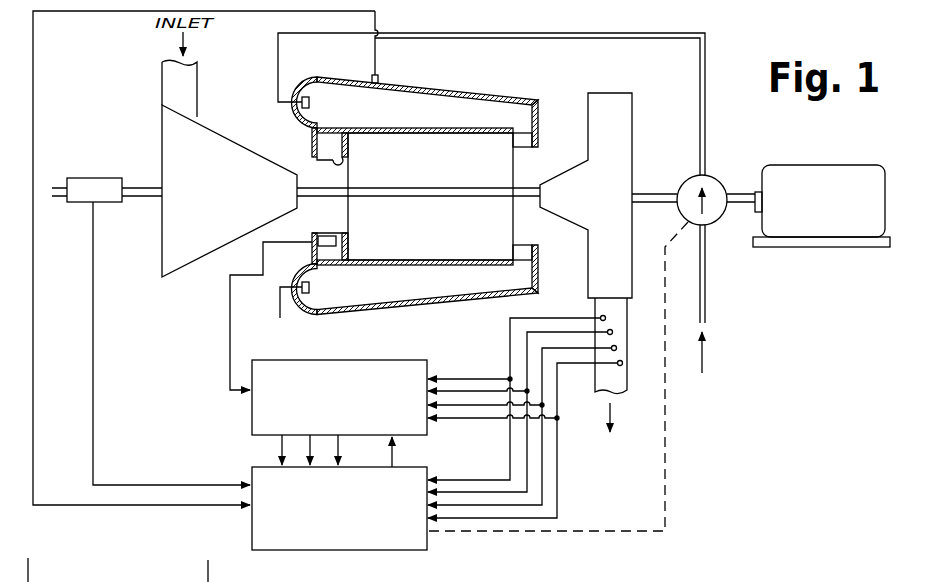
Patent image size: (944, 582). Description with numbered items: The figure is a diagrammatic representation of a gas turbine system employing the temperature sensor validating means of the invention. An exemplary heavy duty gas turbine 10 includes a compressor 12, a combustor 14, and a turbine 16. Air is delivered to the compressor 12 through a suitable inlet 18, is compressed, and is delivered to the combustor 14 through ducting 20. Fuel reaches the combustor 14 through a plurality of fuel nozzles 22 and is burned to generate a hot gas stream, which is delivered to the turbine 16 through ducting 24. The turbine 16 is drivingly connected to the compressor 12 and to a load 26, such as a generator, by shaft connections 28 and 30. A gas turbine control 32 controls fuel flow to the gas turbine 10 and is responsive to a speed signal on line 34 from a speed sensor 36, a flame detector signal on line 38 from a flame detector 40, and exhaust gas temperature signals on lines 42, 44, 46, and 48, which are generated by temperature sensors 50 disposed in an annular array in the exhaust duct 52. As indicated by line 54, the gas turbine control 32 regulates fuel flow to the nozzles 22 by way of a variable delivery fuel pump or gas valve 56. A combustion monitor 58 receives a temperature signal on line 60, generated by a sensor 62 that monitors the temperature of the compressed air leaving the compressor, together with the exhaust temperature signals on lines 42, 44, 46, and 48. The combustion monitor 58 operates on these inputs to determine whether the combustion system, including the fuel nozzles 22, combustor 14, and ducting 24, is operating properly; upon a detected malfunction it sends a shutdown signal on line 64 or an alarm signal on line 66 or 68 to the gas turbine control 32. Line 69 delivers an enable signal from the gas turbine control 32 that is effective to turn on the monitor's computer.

The gas turbine 10 is at (530, 87).
The compressor 12 is at (166, 233).
The combustor 14 is at (461, 119).
The turbine 16 is at (622, 140).
The inlet 18 is at (172, 80).
The ducting 20 is at (345, 166).
The fuel nozzles 22 is at (309, 104).
The ducting 24 is at (519, 148).
The load 26 is at (819, 172).
The shaft connection 28 is at (437, 181).
The shaft connection 30 is at (736, 213).
The gas turbine control 32 is at (350, 544).
The line 34 is at (93, 367).
The speed sensor 36 is at (104, 182).
The line 38 is at (33, 385).
The flame detector 40 is at (376, 84).
The line 42 is at (507, 440).
The line 44 is at (523, 455).
The line 46 is at (543, 488).
The line 48 is at (559, 475).
The temperature sensors 50 is at (606, 318).
The exhaust duct 52 is at (619, 381).
The line 54 is at (666, 501).
The variable delivery fuel pump or gas valve 56 is at (713, 178).
The combustion monitor 58 is at (256, 412).
The line 60 is at (229, 333).
The sensor 62 is at (336, 223).
The line 64 is at (339, 450).
The line 66 is at (313, 452).
The line 68 is at (278, 446).
The line 69 is at (396, 455).